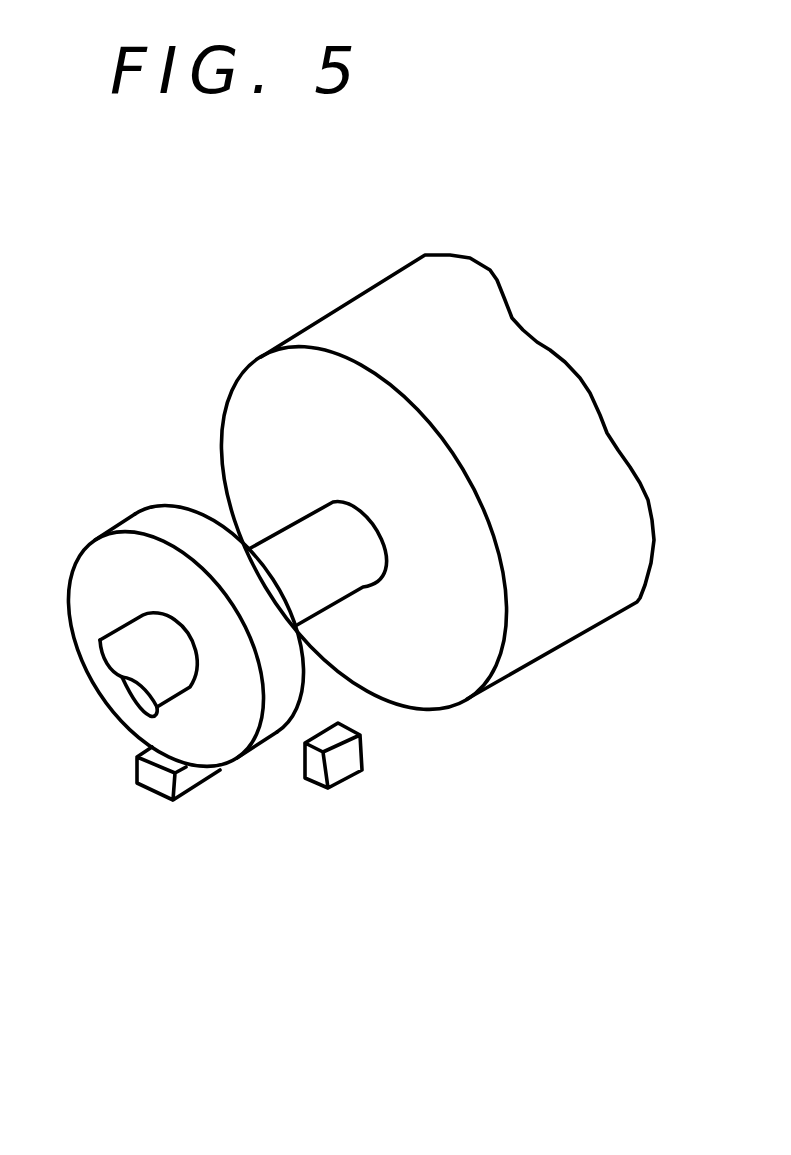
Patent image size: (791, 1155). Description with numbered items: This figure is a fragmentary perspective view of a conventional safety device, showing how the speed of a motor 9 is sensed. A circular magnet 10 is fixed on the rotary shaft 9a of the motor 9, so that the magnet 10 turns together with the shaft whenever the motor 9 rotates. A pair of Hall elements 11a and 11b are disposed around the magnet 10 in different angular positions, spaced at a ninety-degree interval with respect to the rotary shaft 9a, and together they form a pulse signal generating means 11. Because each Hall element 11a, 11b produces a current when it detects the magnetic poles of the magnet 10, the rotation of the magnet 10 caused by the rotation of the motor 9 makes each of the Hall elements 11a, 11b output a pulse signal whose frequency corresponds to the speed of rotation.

The motor 9 is at (577, 485).
The rotary shaft 9a is at (342, 570).
The circular magnet 10 is at (153, 527).
The pulse signal generating means 11 is at (239, 842).
The Hall element 11a is at (348, 760).
The Hall element 11b is at (155, 780).